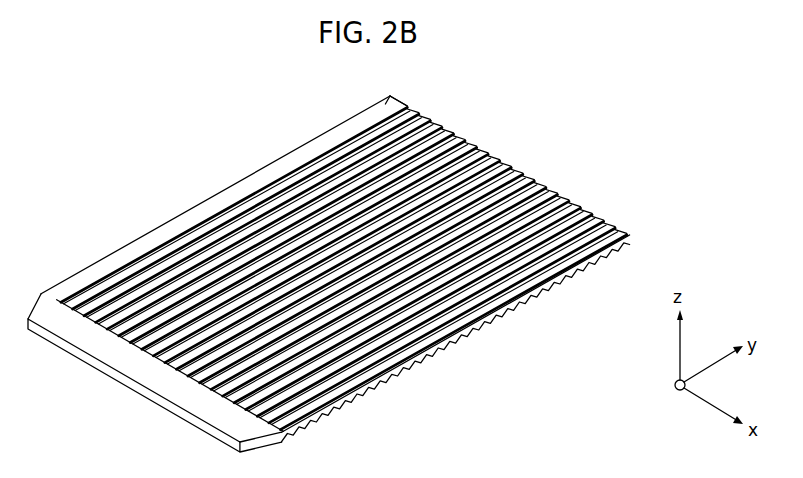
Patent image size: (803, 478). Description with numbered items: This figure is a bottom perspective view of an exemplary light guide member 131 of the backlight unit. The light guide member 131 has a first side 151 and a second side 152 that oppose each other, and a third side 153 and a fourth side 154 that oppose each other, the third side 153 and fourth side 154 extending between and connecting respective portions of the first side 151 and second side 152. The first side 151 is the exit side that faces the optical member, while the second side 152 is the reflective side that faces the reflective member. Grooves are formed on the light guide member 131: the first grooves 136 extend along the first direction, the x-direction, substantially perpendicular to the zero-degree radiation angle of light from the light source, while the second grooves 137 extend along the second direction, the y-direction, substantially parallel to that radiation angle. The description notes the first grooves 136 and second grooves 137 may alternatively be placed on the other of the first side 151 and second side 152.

The light guide member 131 is at (630, 236).
The first grooves 136 is at (384, 383).
The second grooves 137 is at (343, 140).
The first side 151 is at (539, 302).
The second side 152 is at (117, 242).
The third side 153 is at (132, 395).
The fourth side 154 is at (508, 148).